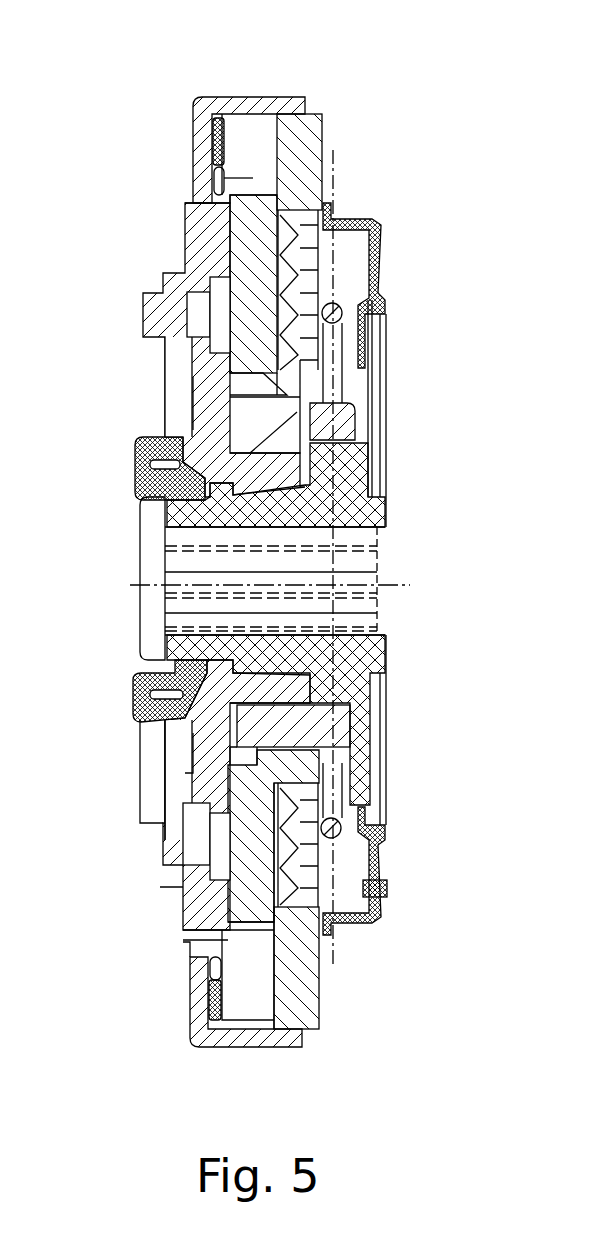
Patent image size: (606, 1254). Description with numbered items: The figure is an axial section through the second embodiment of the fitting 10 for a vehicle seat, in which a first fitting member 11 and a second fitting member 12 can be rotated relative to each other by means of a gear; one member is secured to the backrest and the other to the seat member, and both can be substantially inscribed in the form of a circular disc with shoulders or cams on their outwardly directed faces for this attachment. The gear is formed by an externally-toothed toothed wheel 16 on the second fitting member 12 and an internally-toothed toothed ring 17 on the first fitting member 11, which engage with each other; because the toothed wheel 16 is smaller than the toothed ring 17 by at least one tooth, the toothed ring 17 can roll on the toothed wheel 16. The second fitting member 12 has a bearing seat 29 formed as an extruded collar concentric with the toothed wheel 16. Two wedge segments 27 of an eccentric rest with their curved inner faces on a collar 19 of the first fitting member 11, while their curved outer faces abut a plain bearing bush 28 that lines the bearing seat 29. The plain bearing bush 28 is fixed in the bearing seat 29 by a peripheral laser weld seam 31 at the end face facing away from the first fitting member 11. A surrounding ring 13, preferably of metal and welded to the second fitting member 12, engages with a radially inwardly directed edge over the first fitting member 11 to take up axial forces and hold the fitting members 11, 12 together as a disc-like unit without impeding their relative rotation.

The fitting 10 is at (442, 243).
The first fitting member 11 is at (203, 245).
The second fitting member 12 is at (322, 131).
The surrounding ring 13 is at (252, 101).
The toothed wheel 16 is at (257, 232).
The toothed ring 17 is at (210, 170).
The collar 19 is at (360, 508).
The wedge segments 27 is at (255, 418).
The plain bearing bush 28 is at (380, 423).
The bearing seat 29 is at (345, 330).
The laser weld seam 31 is at (290, 762).